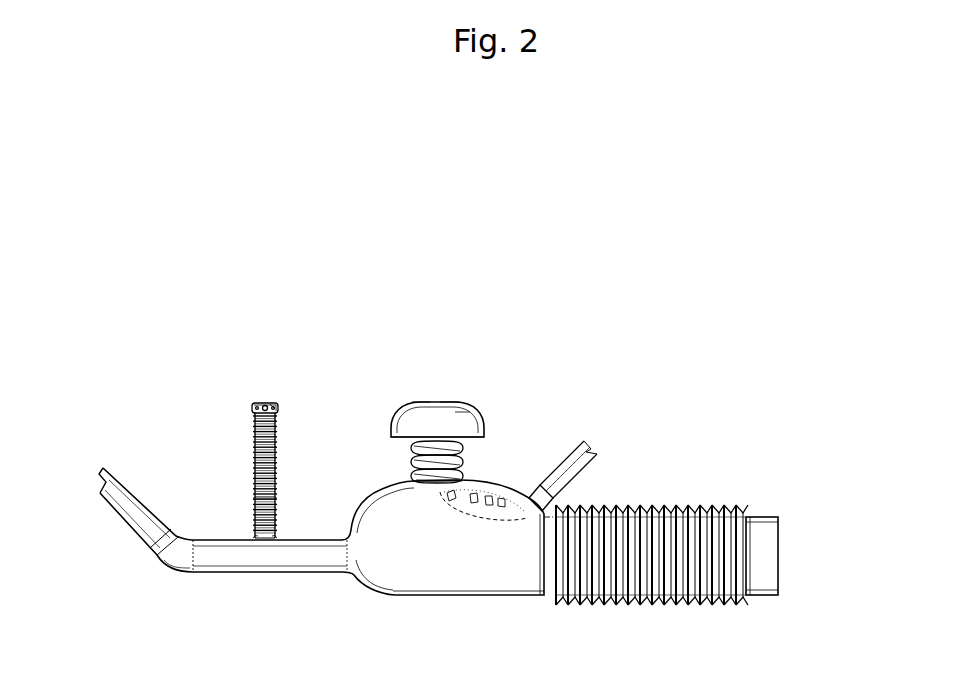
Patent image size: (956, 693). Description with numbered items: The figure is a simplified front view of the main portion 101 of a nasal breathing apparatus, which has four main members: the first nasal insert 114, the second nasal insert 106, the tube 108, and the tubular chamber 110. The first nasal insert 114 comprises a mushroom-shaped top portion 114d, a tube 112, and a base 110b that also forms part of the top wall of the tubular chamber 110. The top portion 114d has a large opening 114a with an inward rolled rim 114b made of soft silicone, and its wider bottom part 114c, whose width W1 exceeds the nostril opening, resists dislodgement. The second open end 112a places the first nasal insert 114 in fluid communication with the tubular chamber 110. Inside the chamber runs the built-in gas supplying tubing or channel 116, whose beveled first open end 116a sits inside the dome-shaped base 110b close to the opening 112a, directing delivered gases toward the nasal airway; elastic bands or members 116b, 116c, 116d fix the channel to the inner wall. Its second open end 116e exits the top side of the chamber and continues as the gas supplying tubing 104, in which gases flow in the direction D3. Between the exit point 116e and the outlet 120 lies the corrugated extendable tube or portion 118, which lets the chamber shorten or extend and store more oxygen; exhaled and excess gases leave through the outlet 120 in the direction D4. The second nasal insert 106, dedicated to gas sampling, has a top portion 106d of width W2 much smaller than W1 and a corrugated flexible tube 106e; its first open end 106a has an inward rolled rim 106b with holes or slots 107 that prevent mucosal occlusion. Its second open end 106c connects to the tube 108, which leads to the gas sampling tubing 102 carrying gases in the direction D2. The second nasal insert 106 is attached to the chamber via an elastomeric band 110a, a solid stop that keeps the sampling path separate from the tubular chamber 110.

The main portion 101 is at (488, 583).
The gas sampling tubing 102 is at (141, 517).
The gas supplying tubing 104 is at (570, 472).
The second nasal insert 106 is at (255, 462).
The first open end 106a is at (278, 406).
The inward rolled rim 106b is at (273, 403).
The second open end 106c is at (265, 545).
The top portion 106d is at (258, 407).
The tube 106e is at (254, 500).
The holes or slots 107 is at (254, 408).
The tube 108 is at (302, 560).
The tubular chamber 110 is at (428, 578).
The elastomeric band 110a is at (347, 565).
The base 110b is at (437, 483).
The tube 112 is at (413, 460).
The second open end 112a is at (384, 487).
The first nasal insert 114 is at (407, 418).
The opening 114a is at (445, 401).
The inward rolled rim 114b is at (423, 405).
The bottom part 114c is at (402, 437).
The top portion 114d is at (457, 413).
The built-in gas supplying tubing or channel 116 is at (483, 512).
The first open end 116a is at (450, 493).
The elastic band or member 116b is at (477, 497).
The elastic band or member 116c is at (490, 501).
The elastic band or member 116d is at (497, 503).
The second open end 116e is at (543, 500).
The tube or portion 118 is at (653, 510).
The outlet 120 is at (764, 588).
The direction D2 is at (108, 472).
The direction D3 is at (603, 438).
The direction D4 is at (828, 557).
The width W1 is at (483, 310).
The width W2 is at (277, 368).